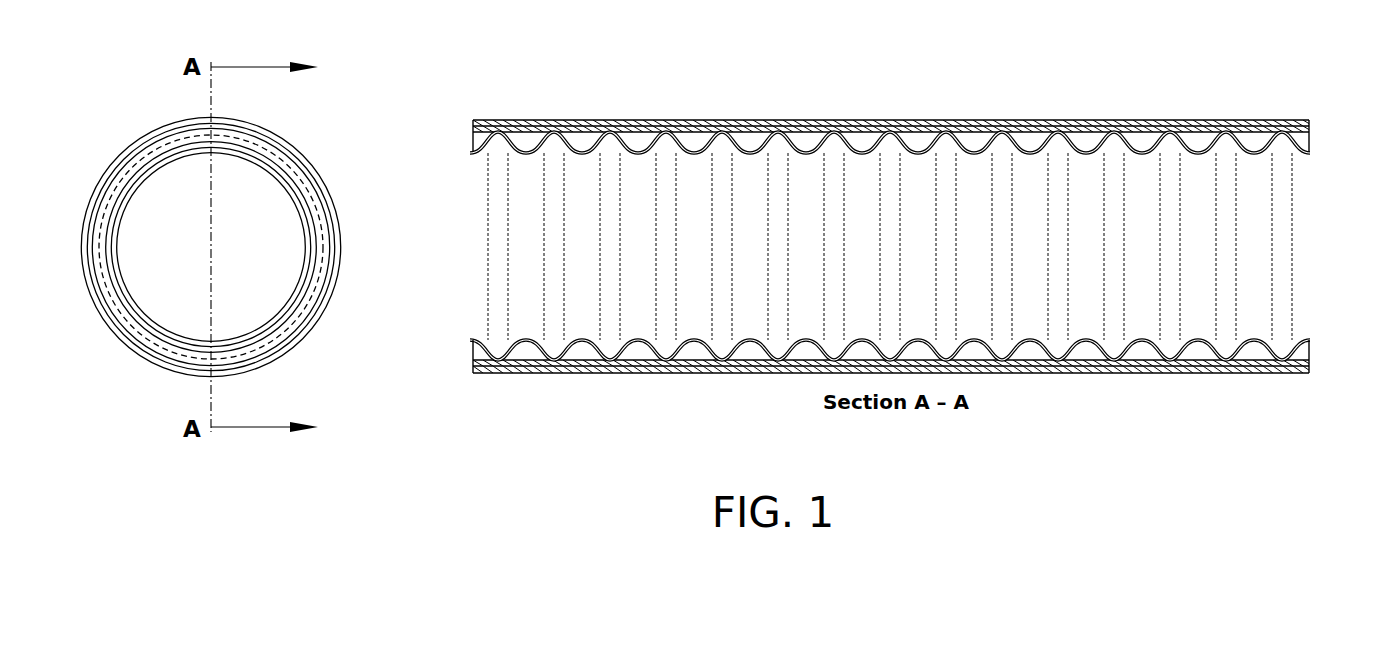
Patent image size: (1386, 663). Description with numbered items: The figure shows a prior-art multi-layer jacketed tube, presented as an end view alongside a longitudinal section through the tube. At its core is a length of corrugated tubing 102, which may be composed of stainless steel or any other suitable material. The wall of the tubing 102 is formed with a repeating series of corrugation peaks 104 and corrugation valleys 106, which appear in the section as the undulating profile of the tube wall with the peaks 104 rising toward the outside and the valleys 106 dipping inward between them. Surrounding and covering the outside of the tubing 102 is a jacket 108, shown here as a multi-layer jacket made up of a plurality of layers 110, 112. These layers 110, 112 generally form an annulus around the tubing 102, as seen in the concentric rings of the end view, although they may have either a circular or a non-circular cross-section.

The corrugated tubing 102 is at (143, 307).
The corrugation peaks 104 is at (494, 152).
The corrugation valleys 106 is at (584, 160).
The jacket 108 is at (464, 363).
The layer 110 is at (1309, 350).
The layer 112 is at (1307, 376).